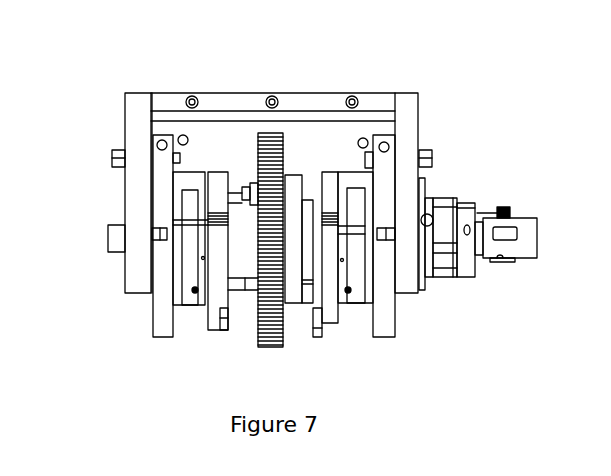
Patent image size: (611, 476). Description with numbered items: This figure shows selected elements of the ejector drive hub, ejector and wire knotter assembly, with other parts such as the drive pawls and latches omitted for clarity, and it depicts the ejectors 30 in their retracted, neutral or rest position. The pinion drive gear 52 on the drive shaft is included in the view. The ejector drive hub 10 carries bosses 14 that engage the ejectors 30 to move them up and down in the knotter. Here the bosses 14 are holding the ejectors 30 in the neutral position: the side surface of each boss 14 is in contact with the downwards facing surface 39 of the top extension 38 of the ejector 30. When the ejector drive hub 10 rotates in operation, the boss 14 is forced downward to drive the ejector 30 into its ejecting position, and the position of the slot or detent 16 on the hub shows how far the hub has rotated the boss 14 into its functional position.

The ejector drive hub 10 is at (358, 183).
The boss 14 is at (217, 197).
The slot or detent 16 is at (355, 210).
The ejector 30 is at (220, 333).
The extension 38 is at (216, 203).
The downwards facing surface 39 is at (216, 200).
The pinion drive gear 52 is at (255, 287).